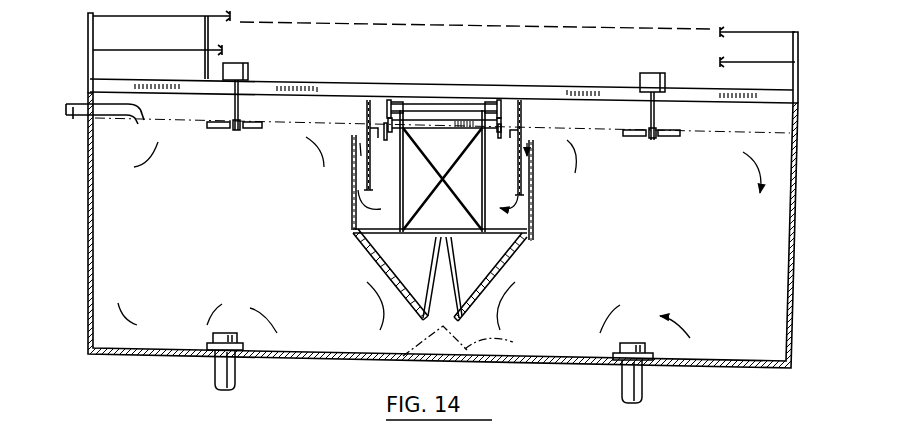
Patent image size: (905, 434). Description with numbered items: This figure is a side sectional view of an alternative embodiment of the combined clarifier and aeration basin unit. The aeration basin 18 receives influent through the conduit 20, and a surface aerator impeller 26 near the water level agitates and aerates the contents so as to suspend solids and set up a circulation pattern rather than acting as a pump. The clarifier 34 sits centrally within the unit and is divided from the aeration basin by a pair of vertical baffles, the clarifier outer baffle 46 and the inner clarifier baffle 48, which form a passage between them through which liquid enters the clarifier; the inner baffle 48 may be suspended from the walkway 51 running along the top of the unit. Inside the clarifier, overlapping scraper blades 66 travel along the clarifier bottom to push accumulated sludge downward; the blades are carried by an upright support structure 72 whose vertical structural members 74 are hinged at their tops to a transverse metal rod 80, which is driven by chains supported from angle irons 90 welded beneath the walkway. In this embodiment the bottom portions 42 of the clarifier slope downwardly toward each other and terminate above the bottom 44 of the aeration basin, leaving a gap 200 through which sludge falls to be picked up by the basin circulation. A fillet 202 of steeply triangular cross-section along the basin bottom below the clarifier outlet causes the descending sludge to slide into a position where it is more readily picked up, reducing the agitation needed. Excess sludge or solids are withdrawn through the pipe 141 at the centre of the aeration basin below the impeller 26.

The aeration basin 18 is at (246, 242).
The conduit 20 is at (76, 117).
The impeller 26 is at (243, 131).
The clarifier 34 is at (350, 215).
The sloping bottom portions of the clarifier 42 is at (368, 255).
The bottom of the aeration basin 44 is at (313, 352).
The clarifier outer baffle 46 is at (351, 208).
The inner clarifier baffle 48 is at (367, 106).
The walkway 51 is at (770, 93).
The scraper blades 66 is at (380, 264).
The upright support structure 72 is at (492, 171).
The vertical structural members 74 is at (428, 278).
The transverse metal rod 80 is at (418, 106).
The angle irons 90 is at (499, 105).
The pipe 141 is at (218, 378).
The gap 200 is at (403, 356).
The fillet 202 is at (509, 342).